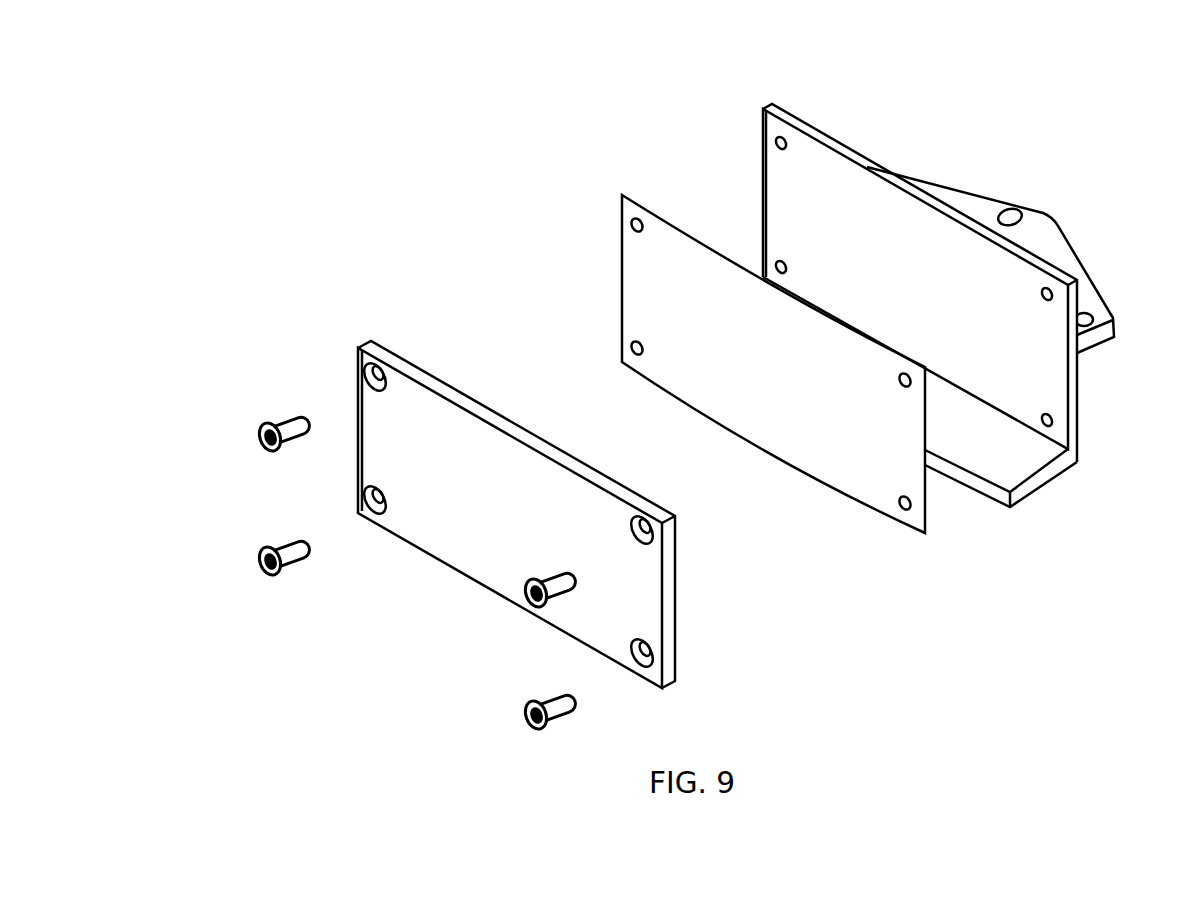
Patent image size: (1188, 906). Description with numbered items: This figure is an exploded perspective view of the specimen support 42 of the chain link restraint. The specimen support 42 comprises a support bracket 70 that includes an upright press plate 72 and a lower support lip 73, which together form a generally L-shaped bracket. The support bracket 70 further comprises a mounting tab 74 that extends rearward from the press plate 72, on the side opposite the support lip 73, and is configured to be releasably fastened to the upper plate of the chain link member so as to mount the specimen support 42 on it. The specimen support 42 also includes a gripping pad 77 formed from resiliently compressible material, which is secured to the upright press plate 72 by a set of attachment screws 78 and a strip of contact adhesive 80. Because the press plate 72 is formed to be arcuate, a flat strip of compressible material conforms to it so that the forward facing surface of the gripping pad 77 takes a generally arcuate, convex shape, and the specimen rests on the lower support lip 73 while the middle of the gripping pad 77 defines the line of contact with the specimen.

The specimen support 42 is at (340, 163).
The support bracket 70 is at (750, 97).
The upright press plate 72 is at (807, 187).
The lower support lip 73 is at (1010, 468).
The mounting tab 74 is at (973, 208).
The gripping pad 77 is at (477, 563).
The attachment screws 78 is at (258, 433).
The strip of contact adhesive 80 is at (634, 287).